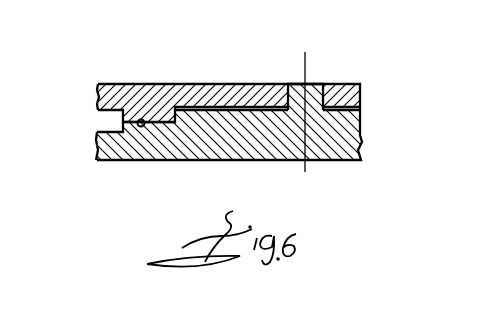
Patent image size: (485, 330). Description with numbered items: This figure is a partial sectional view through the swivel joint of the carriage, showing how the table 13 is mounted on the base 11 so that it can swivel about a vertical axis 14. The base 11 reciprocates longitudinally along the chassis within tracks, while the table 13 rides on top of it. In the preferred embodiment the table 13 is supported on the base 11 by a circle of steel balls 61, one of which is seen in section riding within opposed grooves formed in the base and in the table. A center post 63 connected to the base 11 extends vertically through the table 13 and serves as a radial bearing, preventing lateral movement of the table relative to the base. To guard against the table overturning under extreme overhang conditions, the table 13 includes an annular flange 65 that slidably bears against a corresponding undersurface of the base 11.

The base 11 is at (318, 132).
The table 13 is at (253, 84).
The vertical axis 14 is at (306, 60).
The steel balls 61 is at (140, 127).
The center post 63 is at (315, 84).
The annular flange 65 is at (173, 124).